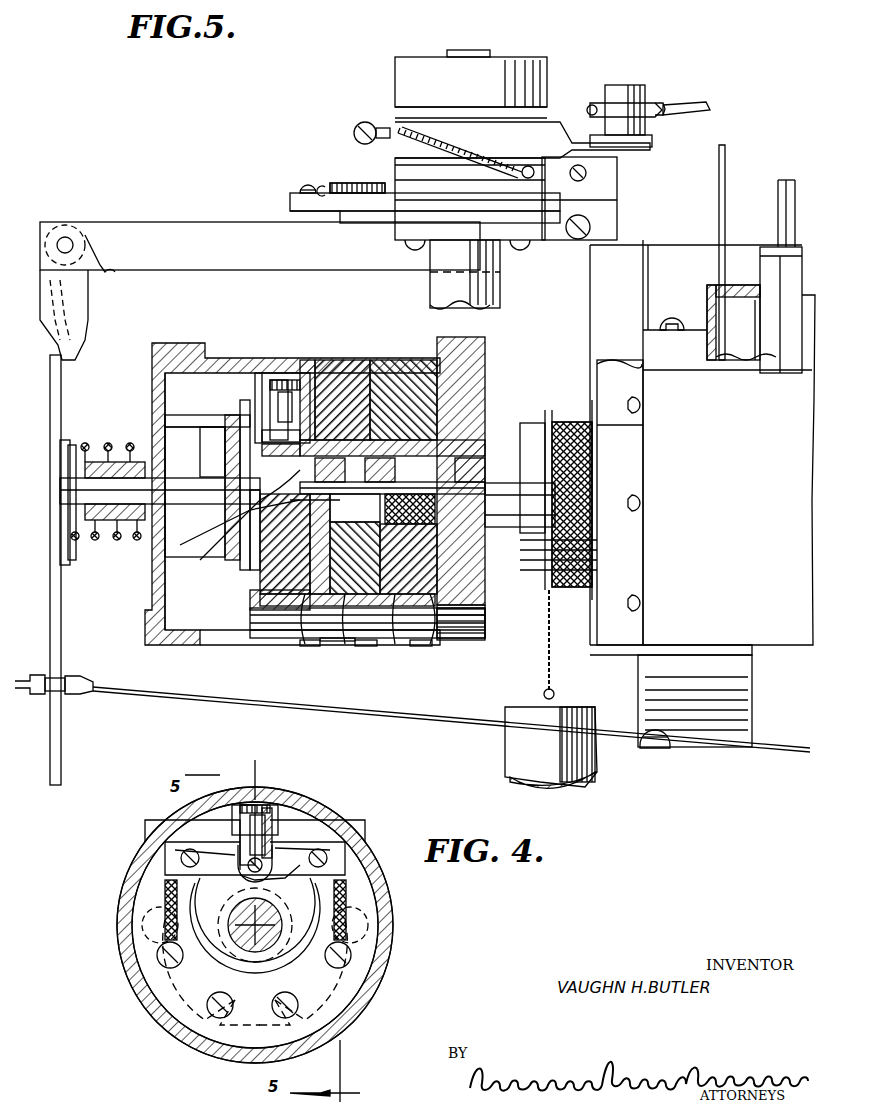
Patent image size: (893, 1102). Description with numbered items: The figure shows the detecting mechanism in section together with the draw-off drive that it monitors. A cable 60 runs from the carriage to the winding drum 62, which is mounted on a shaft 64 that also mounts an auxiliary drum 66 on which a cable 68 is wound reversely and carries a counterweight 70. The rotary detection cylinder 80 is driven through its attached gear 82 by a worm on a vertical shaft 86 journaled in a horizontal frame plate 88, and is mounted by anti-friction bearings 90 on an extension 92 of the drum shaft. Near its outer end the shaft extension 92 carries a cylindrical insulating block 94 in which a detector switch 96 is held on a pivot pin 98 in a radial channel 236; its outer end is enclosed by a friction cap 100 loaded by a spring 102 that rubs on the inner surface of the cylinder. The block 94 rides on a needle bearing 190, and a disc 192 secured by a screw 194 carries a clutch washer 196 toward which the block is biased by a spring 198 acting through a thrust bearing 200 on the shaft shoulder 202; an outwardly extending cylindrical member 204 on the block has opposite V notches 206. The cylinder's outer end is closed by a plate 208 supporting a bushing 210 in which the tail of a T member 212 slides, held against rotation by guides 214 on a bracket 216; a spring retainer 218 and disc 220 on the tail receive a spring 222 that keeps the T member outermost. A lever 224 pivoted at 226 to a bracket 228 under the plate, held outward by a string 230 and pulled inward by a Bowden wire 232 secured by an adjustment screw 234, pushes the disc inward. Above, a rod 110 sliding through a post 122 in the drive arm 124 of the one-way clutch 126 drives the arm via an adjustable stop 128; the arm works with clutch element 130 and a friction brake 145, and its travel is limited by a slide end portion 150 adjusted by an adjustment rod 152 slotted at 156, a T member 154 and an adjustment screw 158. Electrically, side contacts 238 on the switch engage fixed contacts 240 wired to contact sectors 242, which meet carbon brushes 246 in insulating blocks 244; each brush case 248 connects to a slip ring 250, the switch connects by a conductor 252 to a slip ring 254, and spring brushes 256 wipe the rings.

In FIG. 5, the cable 60 is at (726, 170).
In FIG. 5, the winding drum 62 is at (740, 305).
In FIG. 5, the shaft 64 is at (500, 490).
In FIG. 5, the auxiliary drum 66 is at (558, 420).
In FIG. 5, the cable 68 is at (551, 668).
In FIG. 5, the counterweight 70 is at (572, 710).
In FIG. 5, the rotary detection cylinder 80 is at (208, 345).
In FIG. 4, the rotary detection cylinder 80 is at (355, 1000).
In FIG. 5, the gear 82 is at (486, 350).
In FIG. 5, the vertical shaft 86 is at (494, 282).
In FIG. 5, the plate 88 is at (300, 213).
In FIG. 5, the anti-friction bearings 90 is at (470, 450).
In FIG. 5, the shaft extension 92 is at (372, 544).
In FIG. 4, the shaft extension 92 is at (255, 950).
In FIG. 5, the block 94 is at (290, 395).
In FIG. 4, the block 94 is at (270, 840).
In FIG. 5, the detector switch 96 is at (270, 420).
In FIG. 4, the detector switch 96 is at (270, 810).
In FIG. 5, the pivot pin 98 is at (272, 448).
In FIG. 4, the pivot pin 98 is at (260, 875).
In FIG. 5, the friction cap 100 is at (272, 392).
In FIG. 4, the friction cap 100 is at (262, 815).
In FIG. 5, the spring 102 is at (283, 385).
In FIG. 4, the spring 102 is at (268, 805).
In FIG. 5, the rod 110 is at (700, 105).
In FIG. 5, the post 122 is at (628, 90).
In FIG. 5, the drive arm 124 is at (640, 132).
In FIG. 5, the one-way clutch 126 is at (522, 55).
In FIG. 5, the adjustable stop 128 is at (372, 133).
In FIG. 5, the clutch element 130 is at (466, 152).
In FIG. 5, the friction brake 145 is at (290, 193).
In FIG. 5, the slide end portion 150 is at (604, 152).
In FIG. 5, the adjustment rod 152 is at (594, 174).
In FIG. 5, the T member 154 is at (606, 214).
In FIG. 5, the slot 156 is at (578, 193).
In FIG. 5, the adjustment screw 158 is at (581, 235).
In FIG. 5, the needle bearing 190 is at (312, 365).
In FIG. 5, the disc 192 is at (236, 518).
In FIG. 5, the screw 194 is at (230, 526).
In FIG. 5, the clutch washer 196 is at (250, 540).
In FIG. 5, the spring 198 is at (335, 370).
In FIG. 5, the thrust bearing 200 is at (375, 365).
In FIG. 5, the shaft shoulder 202 is at (370, 500).
In FIG. 5, the cylindrical member 204 is at (250, 598).
In FIG. 5, the V notches 206 is at (230, 495).
In FIG. 5, the plate 208 is at (150, 380).
In FIG. 5, the bushing 210 is at (125, 540).
In FIG. 5, the T member 212 is at (105, 530).
In FIG. 5, the guides 214 is at (198, 420).
In FIG. 5, the bracket 216 is at (168, 420).
In FIG. 5, the spring retainer 218 is at (88, 445).
In FIG. 5, the disc 220 is at (80, 447).
In FIG. 5, the spring 222 is at (128, 445).
In FIG. 5, the lever 224 is at (62, 625).
In FIG. 5, the pivot 226 is at (70, 240).
In FIG. 5, the bracket 228 is at (205, 230).
In FIG. 5, the string 230 is at (68, 360).
In FIG. 5, the Bowden wire 232 is at (172, 697).
In FIG. 5, the adjustment screw 234 is at (70, 692).
In FIG. 5, the radial channel 236 is at (262, 385).
In FIG. 4, the radial channel 236 is at (230, 818).
In FIG. 4, the side contacts 238 is at (262, 860).
In FIG. 4, the contacts 240 is at (230, 855).
In FIG. 5, the contact sectors 242 is at (285, 544).
In FIG. 4, the contact sectors 242 is at (150, 995).
In FIG. 5, the insulating blocks 244 is at (350, 645).
In FIG. 5, the carbon brushes 246 is at (390, 559).
In FIG. 4, the carbon brushes 246 is at (135, 938).
In FIG. 5, the conducting case 248 is at (310, 648).
In FIG. 5, the slip ring 250 is at (430, 650).
In FIG. 4, the conductor 252 is at (330, 850).
In FIG. 5, the slip ring 254 is at (300, 638).
In FIG. 5, the spring brushes 256 is at (305, 646).